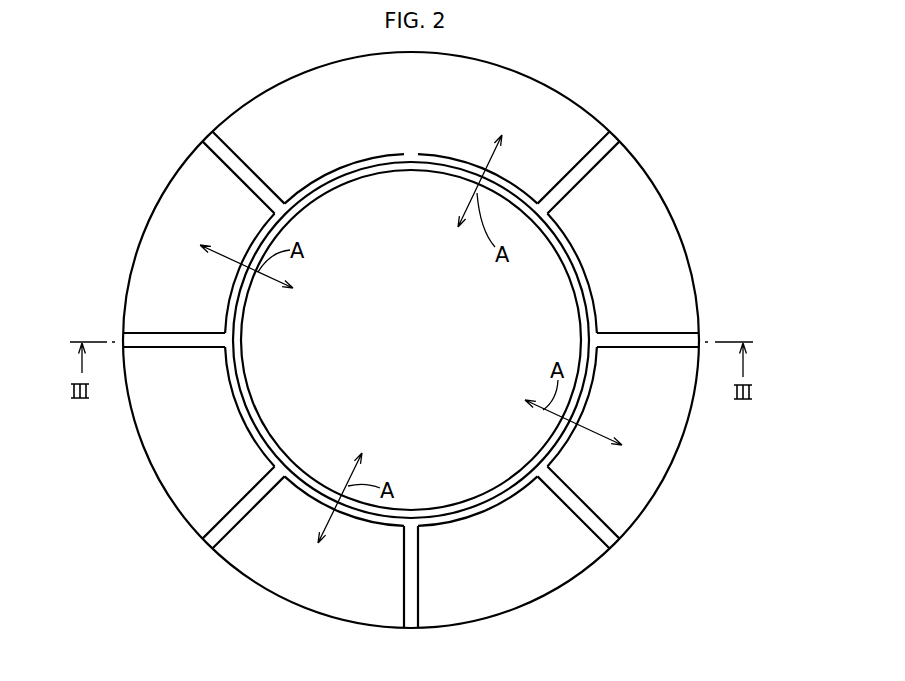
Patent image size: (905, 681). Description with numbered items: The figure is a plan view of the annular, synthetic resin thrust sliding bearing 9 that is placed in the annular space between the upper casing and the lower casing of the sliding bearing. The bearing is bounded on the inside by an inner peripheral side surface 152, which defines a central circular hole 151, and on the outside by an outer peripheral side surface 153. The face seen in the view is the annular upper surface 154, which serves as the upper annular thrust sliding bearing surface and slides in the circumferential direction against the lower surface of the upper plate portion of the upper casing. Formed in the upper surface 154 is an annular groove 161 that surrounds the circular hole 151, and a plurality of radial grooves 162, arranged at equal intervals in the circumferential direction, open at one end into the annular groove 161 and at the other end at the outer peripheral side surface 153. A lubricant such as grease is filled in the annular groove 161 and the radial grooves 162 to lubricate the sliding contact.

The thrust sliding bearing 9 is at (667, 167).
The central circular hole 151 is at (327, 352).
The inner peripheral side surface 152 is at (348, 186).
The outer peripheral side surface 153 is at (603, 120).
The annular upper surface 154 is at (635, 473).
The annular groove 161 is at (580, 273).
The radial grooves 162 is at (232, 157).